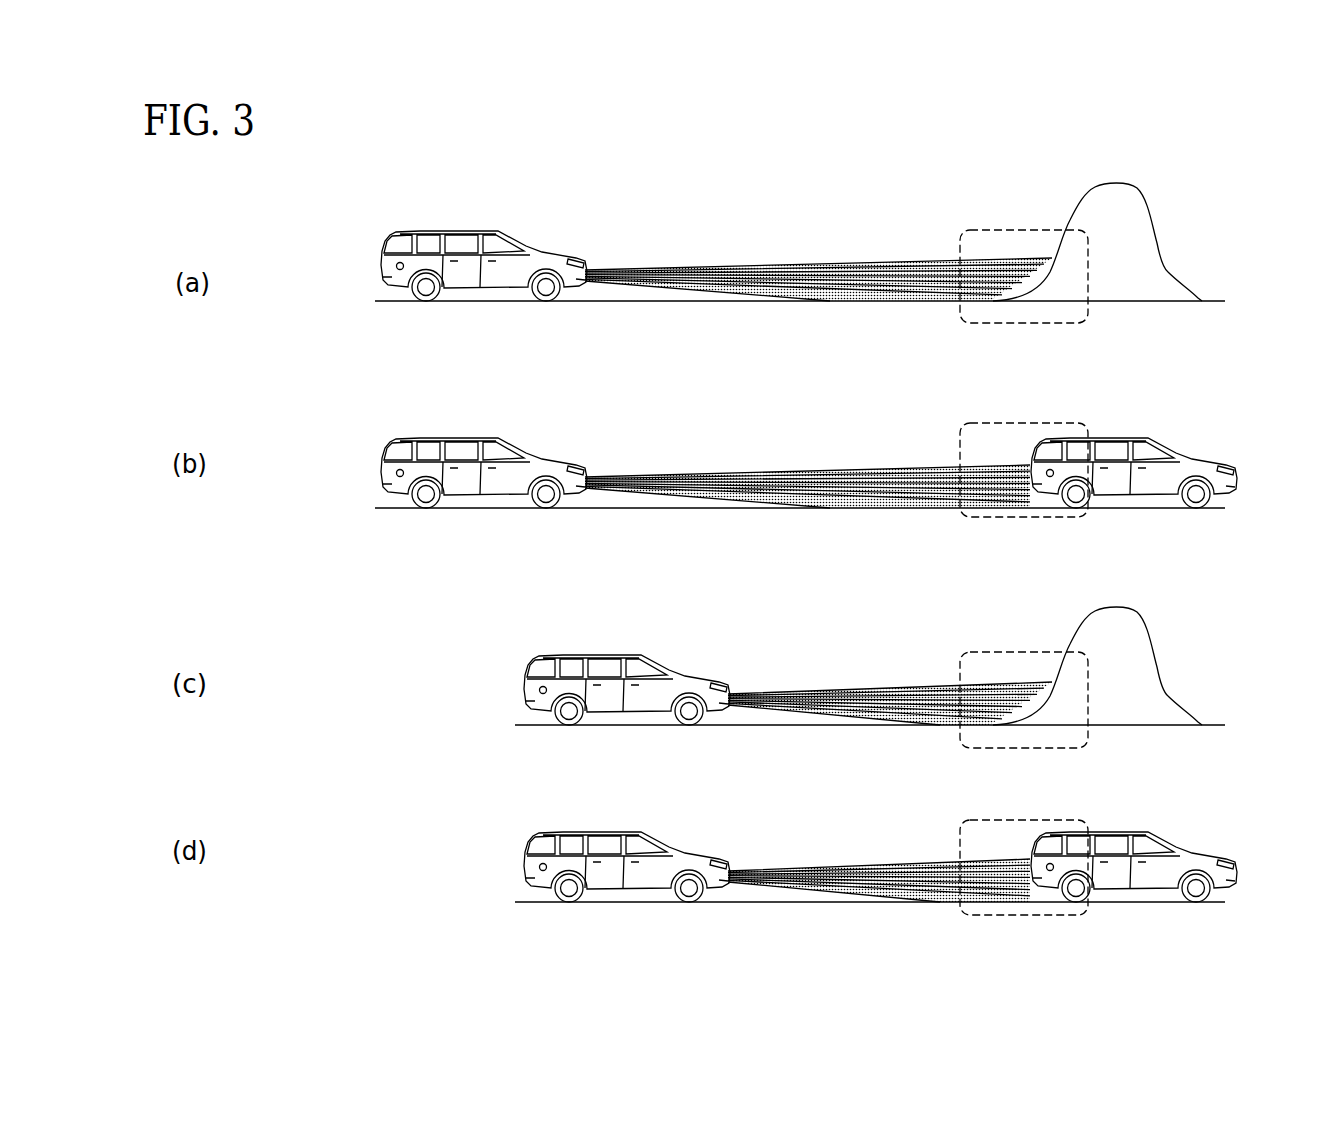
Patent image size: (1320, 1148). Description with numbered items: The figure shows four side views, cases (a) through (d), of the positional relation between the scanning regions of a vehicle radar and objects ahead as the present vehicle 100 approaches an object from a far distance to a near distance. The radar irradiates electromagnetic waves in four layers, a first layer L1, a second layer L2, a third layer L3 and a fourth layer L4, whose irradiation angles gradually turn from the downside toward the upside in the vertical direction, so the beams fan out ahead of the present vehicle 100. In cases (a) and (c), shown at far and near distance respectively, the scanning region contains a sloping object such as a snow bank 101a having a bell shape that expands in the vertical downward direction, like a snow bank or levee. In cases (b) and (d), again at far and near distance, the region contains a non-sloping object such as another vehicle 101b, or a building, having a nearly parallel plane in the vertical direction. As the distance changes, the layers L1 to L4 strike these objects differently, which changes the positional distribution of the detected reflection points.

The present vehicle 100 is at (522, 844).
The snow bank 101a is at (1142, 661).
The another vehicle 101b is at (1195, 856).
The first layer L1 is at (826, 892).
The second layer L2 is at (860, 886).
The third layer L3 is at (897, 880).
The fourth layer L4 is at (933, 864).